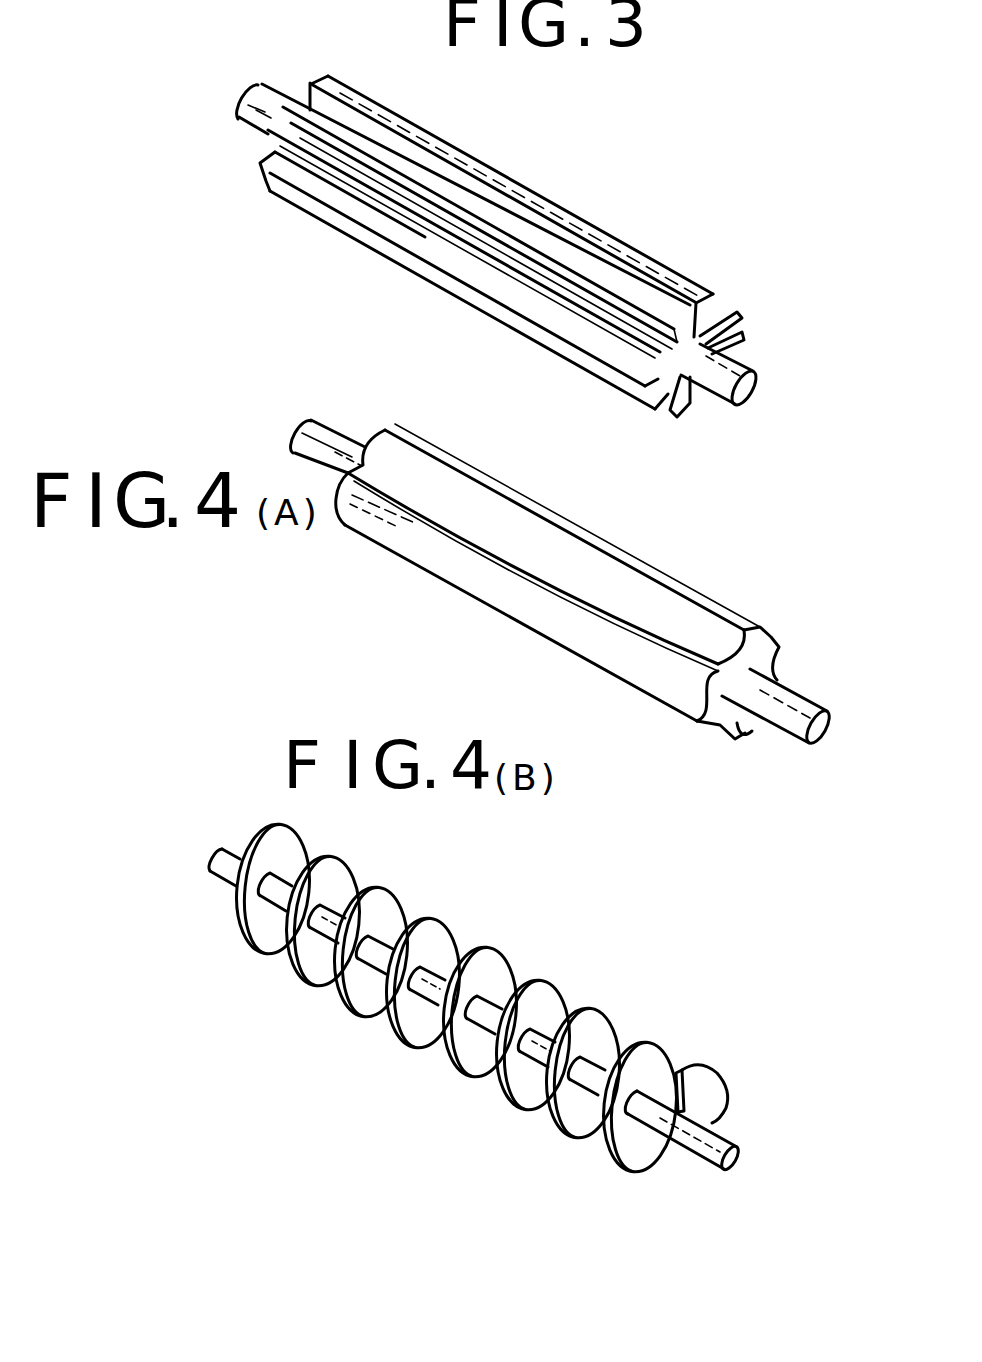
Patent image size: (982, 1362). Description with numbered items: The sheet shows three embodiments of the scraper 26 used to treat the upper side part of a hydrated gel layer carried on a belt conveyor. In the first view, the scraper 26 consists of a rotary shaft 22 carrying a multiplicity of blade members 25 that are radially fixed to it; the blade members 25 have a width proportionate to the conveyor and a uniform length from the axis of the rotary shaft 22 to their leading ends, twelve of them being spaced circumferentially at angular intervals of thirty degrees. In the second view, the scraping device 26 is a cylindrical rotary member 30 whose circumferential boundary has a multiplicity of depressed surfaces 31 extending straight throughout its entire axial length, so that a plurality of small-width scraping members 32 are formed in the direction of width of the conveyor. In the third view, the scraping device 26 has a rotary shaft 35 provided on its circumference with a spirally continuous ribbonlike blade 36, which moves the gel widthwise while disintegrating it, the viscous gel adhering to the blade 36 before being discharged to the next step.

In FIG. 3, the rotary shaft 22 is at (708, 393).
In FIG. 3, the blade members 25 is at (723, 307).
In FIG. 3, the scraper 26 is at (514, 276).
In FIG. 4A, the scraper 26 is at (562, 616).
In FIG. 4B, the scraper 26 is at (475, 1025).
In FIG. 4A, the cylindrical rotary member 30 is at (713, 707).
In FIG. 4A, the depressed surfaces 31 is at (430, 490).
In FIG. 4A, the scraping members 32 is at (723, 607).
In FIG. 4B, the rotary shaft 35 is at (697, 1157).
In FIG. 4B, the spirally continuous ribbonlike blade 36 is at (590, 1037).